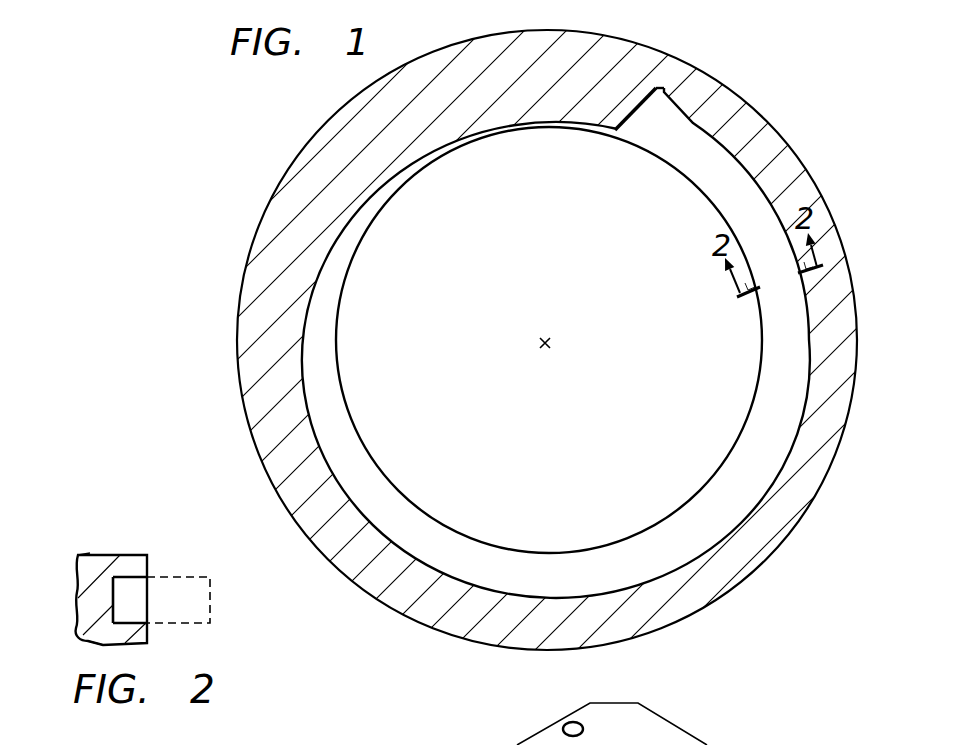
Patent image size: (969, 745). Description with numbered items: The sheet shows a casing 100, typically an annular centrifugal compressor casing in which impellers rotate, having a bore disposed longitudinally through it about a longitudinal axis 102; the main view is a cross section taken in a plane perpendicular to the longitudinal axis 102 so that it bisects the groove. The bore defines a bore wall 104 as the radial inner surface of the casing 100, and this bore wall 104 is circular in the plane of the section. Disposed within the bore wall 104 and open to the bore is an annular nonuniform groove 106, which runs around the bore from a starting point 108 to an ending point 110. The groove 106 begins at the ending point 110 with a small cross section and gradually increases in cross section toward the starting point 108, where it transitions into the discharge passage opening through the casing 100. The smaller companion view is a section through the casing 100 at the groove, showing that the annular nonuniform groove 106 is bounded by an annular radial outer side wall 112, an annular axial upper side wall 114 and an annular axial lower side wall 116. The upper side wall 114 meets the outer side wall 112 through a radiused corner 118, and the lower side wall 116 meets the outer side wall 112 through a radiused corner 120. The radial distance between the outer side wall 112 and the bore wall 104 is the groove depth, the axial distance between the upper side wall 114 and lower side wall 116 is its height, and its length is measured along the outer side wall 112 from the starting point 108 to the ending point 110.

In FIG. 1, the casing 100 is at (310, 121).
In FIG. 2, the casing 100 is at (107, 555).
In FIG. 1, the longitudinal axis 102 is at (540, 344).
In FIG. 1, the bore wall 104 is at (741, 433).
In FIG. 1, the annular nonuniform groove 106 is at (637, 548).
In FIG. 2, the annular nonuniform groove 106 is at (211, 600).
In FIG. 1, the starting point 108 is at (657, 88).
In FIG. 1, the ending point 110 is at (617, 138).
In FIG. 2, the annular radial outer side wall 112 is at (117, 588).
In FIG. 2, the annular axial upper side wall 114 is at (138, 577).
In FIG. 2, the annular axial lower side wall 116 is at (138, 621).
In FIG. 2, the radiused corner 118 is at (80, 560).
In FIG. 2, the radiused corner 120 is at (102, 645).